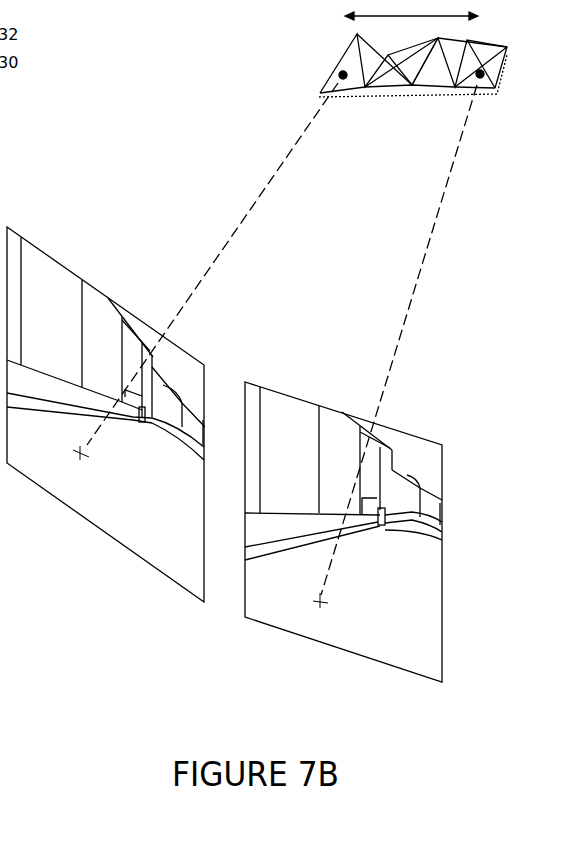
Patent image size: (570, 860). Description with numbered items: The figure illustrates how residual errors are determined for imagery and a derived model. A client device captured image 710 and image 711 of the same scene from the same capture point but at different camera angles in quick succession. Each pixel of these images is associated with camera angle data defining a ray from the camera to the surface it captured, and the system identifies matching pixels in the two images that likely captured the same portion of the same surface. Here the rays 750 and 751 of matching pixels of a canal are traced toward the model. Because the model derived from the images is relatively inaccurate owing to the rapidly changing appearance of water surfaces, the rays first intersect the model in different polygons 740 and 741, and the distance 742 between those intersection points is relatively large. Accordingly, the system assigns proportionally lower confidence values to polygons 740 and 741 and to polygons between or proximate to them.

The image 710 is at (175, 584).
The image 711 is at (290, 632).
The polygon 740 is at (350, 58).
The polygon 741 is at (498, 86).
The distance 742 is at (337, 18).
The ray 750 is at (287, 155).
The ray 751 is at (459, 155).